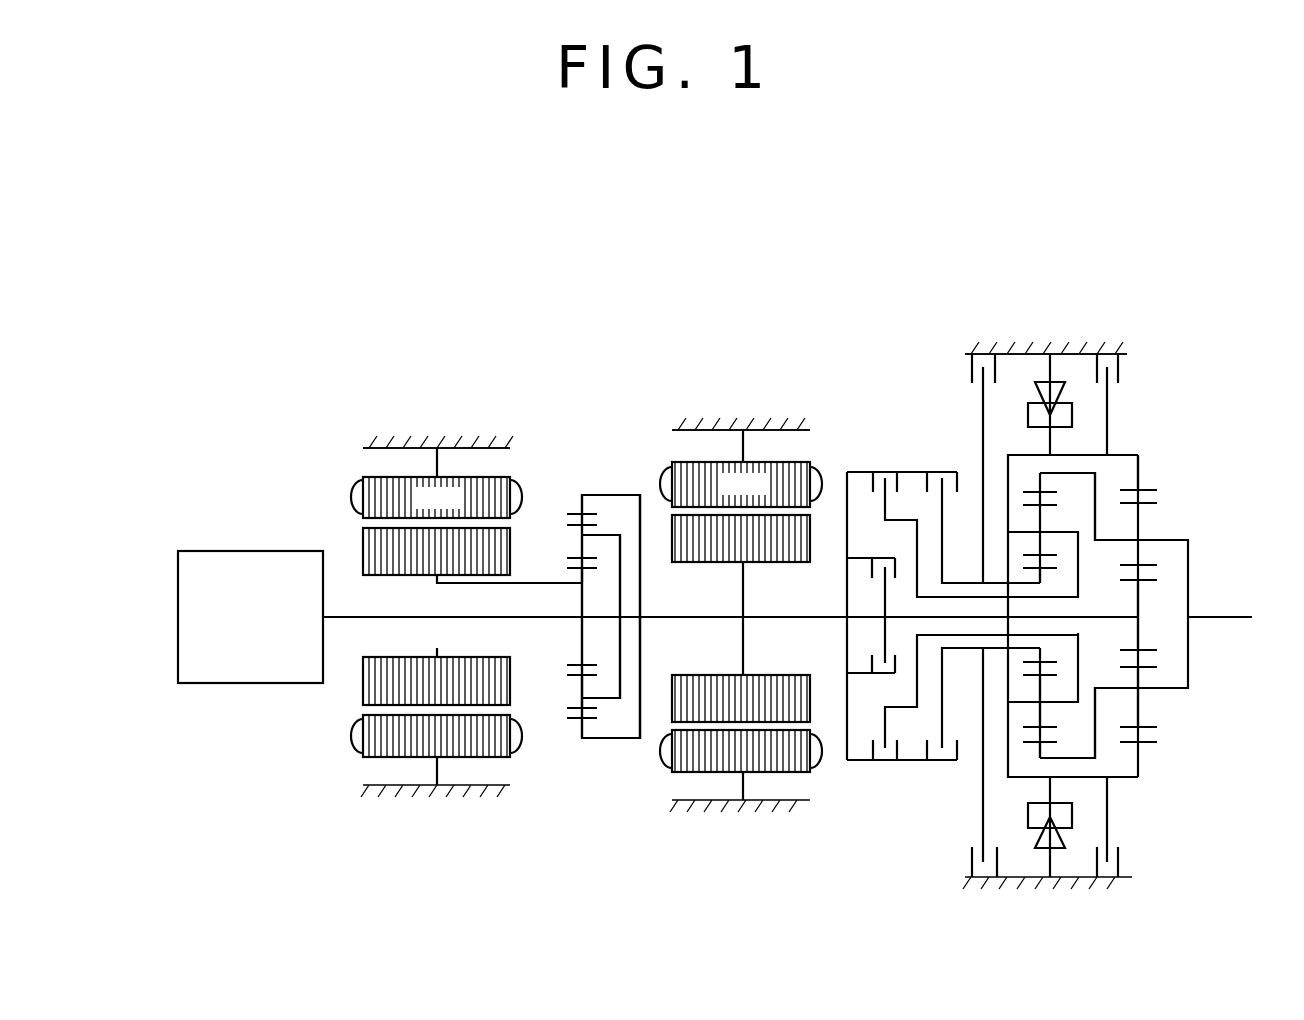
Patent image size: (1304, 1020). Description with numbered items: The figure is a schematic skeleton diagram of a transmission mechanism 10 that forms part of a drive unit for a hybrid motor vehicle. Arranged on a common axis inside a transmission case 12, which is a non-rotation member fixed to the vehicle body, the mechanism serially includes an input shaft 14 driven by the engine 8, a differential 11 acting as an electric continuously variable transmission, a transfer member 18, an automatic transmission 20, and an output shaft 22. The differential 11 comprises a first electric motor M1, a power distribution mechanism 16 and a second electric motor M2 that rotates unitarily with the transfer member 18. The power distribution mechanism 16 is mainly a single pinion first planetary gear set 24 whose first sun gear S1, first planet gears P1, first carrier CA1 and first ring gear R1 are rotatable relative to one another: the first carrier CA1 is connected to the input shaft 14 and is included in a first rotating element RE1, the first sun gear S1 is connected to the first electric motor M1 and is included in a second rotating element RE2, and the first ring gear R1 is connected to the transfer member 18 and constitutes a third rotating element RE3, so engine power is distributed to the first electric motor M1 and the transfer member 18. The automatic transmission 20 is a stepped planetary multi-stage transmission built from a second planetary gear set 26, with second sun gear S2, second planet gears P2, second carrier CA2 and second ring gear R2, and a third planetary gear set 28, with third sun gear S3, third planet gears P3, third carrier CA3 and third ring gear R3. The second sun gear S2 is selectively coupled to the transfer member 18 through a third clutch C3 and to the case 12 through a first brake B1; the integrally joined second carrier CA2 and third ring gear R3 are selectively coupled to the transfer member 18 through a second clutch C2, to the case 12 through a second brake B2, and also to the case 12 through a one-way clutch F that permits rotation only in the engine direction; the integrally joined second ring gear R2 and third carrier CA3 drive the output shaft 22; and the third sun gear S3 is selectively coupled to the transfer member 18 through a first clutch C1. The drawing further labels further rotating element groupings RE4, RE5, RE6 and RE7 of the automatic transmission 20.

The engine 8 is at (243, 573).
The transmission mechanism 10 is at (808, 212).
The differential 11 is at (592, 302).
The transmission case 12 is at (468, 442).
The input shaft 14 is at (350, 620).
The power distribution mechanism 16 is at (608, 417).
The transfer member 18 is at (665, 618).
The automatic transmission 20 is at (938, 321).
The output shaft 22 is at (1225, 619).
The first planetary gear set 24 is at (579, 778).
The second planetary gear set 26 is at (1073, 769).
The third planetary gear set 28 is at (1209, 737).
The first electric motor M1 is at (436, 616).
The second electric motor M2 is at (741, 615).
The first sun gear S1 is at (574, 569).
The first planet gears P1 is at (575, 667).
The first carrier CA1 is at (610, 530).
The first ring gear R1 is at (568, 508).
The second sun gear S2 is at (1032, 573).
The second planet gears P2 is at (1025, 664).
The second carrier CA2 is at (1030, 530).
The second ring gear R2 is at (1030, 744).
The third sun gear S3 is at (1124, 584).
The third planet gears P3 is at (1120, 656).
The third carrier CA3 is at (1208, 522).
The third ring gear R3 is at (1152, 485).
The first clutch C1 is at (874, 616).
The second clutch C2 is at (962, 603).
The third clutch C3 is at (982, 603).
The first brake B1 is at (963, 615).
The second brake B2 is at (1126, 615).
The one-way clutch F is at (1043, 615).
The first rotating element RE1 is at (435, 615).
The second rotating element RE2 is at (470, 588).
The third rotating element RE3 is at (607, 739).
The fourth rotary element RE4 is at (1098, 620).
The fifth rotary element RE5 is at (1076, 473).
The sixth rotary element RE6 is at (1120, 780).
The seventh rotary element RE7 is at (962, 650).